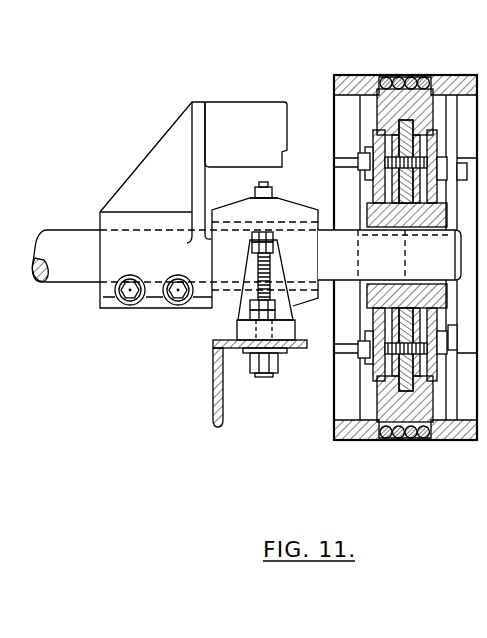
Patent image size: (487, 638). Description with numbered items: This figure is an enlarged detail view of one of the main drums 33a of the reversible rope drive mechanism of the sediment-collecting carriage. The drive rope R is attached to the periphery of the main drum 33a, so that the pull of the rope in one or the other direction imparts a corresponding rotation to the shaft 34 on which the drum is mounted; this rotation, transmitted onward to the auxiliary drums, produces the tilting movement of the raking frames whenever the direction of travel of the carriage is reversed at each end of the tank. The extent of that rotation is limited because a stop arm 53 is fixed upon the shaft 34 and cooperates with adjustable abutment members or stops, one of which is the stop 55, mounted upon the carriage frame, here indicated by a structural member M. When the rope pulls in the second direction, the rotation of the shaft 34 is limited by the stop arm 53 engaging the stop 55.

The stop arm 53 is at (200, 148).
The shaft 34 is at (82, 275).
The adjustable abutment member or stop 55 is at (255, 285).
The structural member M is at (213, 393).
The main drum 33a is at (390, 77).
The drive rope R is at (425, 77).